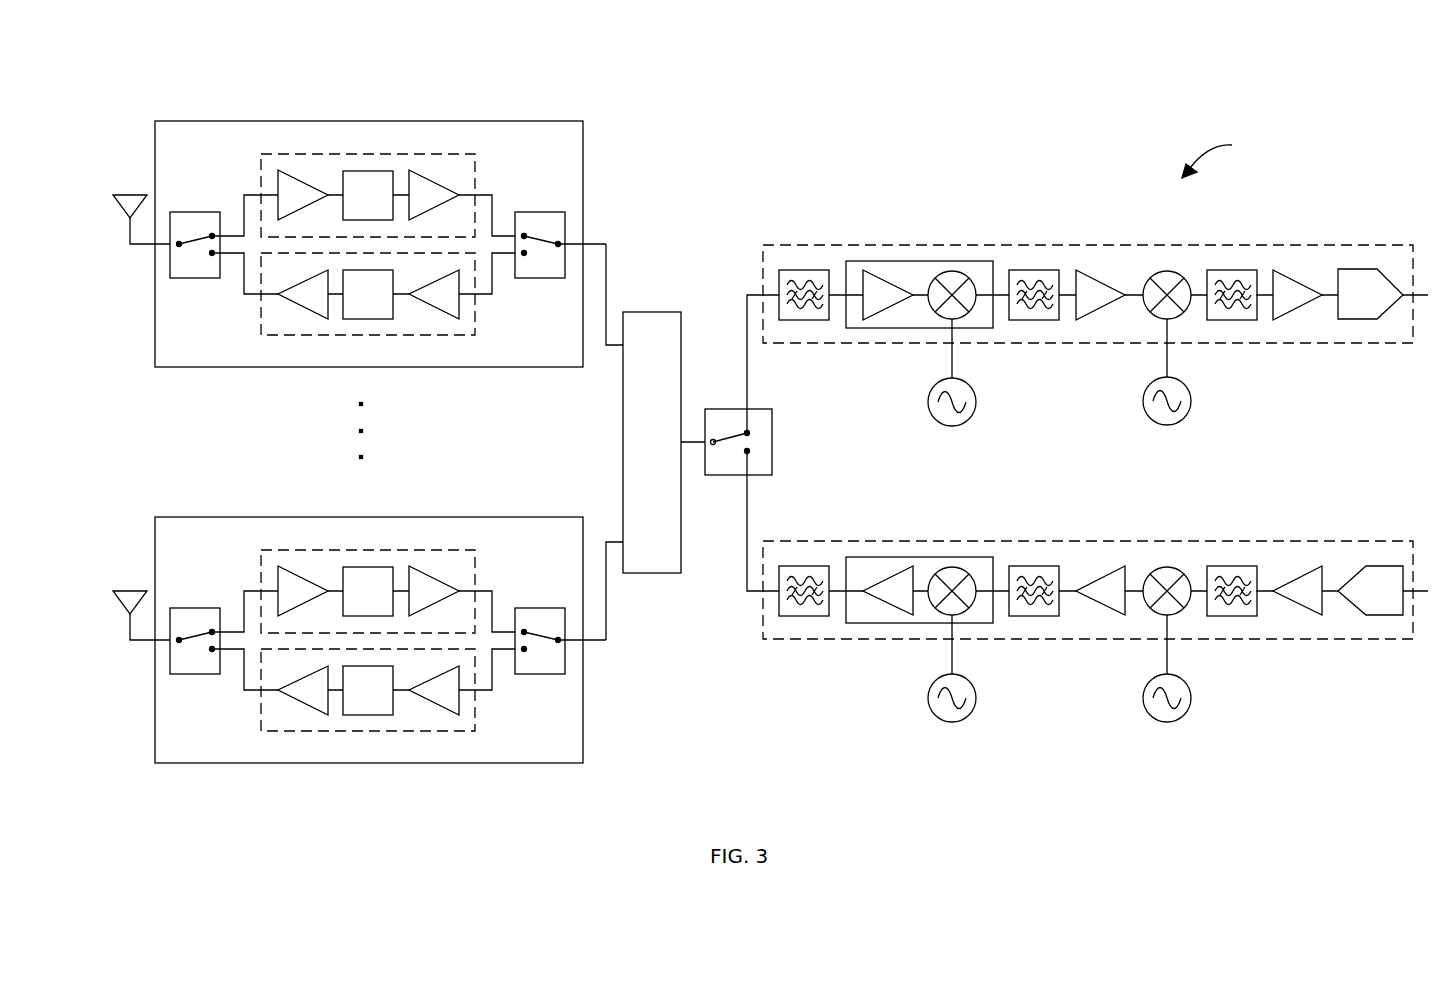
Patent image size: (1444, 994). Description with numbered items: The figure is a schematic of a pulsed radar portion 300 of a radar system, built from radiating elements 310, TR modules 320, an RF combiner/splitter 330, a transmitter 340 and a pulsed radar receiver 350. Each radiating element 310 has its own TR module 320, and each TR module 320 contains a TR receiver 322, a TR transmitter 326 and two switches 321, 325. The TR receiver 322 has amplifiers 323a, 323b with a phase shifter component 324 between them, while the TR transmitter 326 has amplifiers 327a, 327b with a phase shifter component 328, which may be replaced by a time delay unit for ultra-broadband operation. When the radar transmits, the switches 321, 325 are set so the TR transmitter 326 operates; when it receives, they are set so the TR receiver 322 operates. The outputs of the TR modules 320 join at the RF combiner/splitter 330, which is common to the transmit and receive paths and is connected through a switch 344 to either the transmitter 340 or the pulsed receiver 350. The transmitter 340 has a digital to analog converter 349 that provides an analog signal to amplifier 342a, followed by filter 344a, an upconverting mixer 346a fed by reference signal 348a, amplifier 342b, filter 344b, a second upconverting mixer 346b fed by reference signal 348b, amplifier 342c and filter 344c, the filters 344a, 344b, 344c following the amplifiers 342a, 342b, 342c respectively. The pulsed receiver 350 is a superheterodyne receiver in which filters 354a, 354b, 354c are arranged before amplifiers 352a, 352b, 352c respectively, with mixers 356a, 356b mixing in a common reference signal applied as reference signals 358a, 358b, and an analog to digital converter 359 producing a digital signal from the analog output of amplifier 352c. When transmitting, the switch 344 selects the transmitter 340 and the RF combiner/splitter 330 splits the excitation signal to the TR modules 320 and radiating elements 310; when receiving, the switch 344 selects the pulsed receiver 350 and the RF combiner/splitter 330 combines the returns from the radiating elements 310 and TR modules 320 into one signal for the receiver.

The pulsed radar portion 300 is at (1229, 156).
The radiating elements 310 is at (130, 195).
The TR modules 320 is at (170, 121).
The switch 321 is at (540, 212).
The TR receiver 322 is at (280, 154).
The amplifier 323a is at (295, 170).
The amplifier 323b is at (425, 170).
The phase shifter component 324 is at (368, 171).
The switch 325 is at (202, 212).
The TR transmitter 326 is at (297, 335).
The amplifier 327a is at (442, 319).
The amplifier 327b is at (310, 319).
The phase shifter component 328 is at (383, 319).
The RF combiner/splitter 330 is at (660, 312).
The transmitter 340 is at (1385, 541).
The amplifier 342a is at (1316, 608).
The amplifier 342b is at (1117, 608).
The amplifier 342c is at (905, 608).
The switch 344 is at (757, 409).
The filter 344a is at (1232, 566).
The filter 344b is at (1035, 566).
The filter 344c is at (804, 566).
The mixer 346a is at (1167, 567).
The mixer 346b is at (952, 567).
The reference signal 348a is at (1170, 722).
The reference signal 348b is at (955, 722).
The digital to analog converter 349 is at (1388, 615).
The pulsed radar receiver 350 is at (1385, 245).
The amplifier 352a is at (870, 315).
The amplifier 352b is at (1085, 315).
The amplifier 352c is at (1283, 315).
The filter 354a is at (804, 270).
The filter 354b is at (1035, 270).
The filter 354c is at (1232, 270).
The mixer 356a is at (952, 271).
The mixer 356b is at (1167, 271).
The reference signal 358a is at (955, 426).
The reference signal 358b is at (1170, 425).
The analog to digital converter 359 is at (1357, 319).